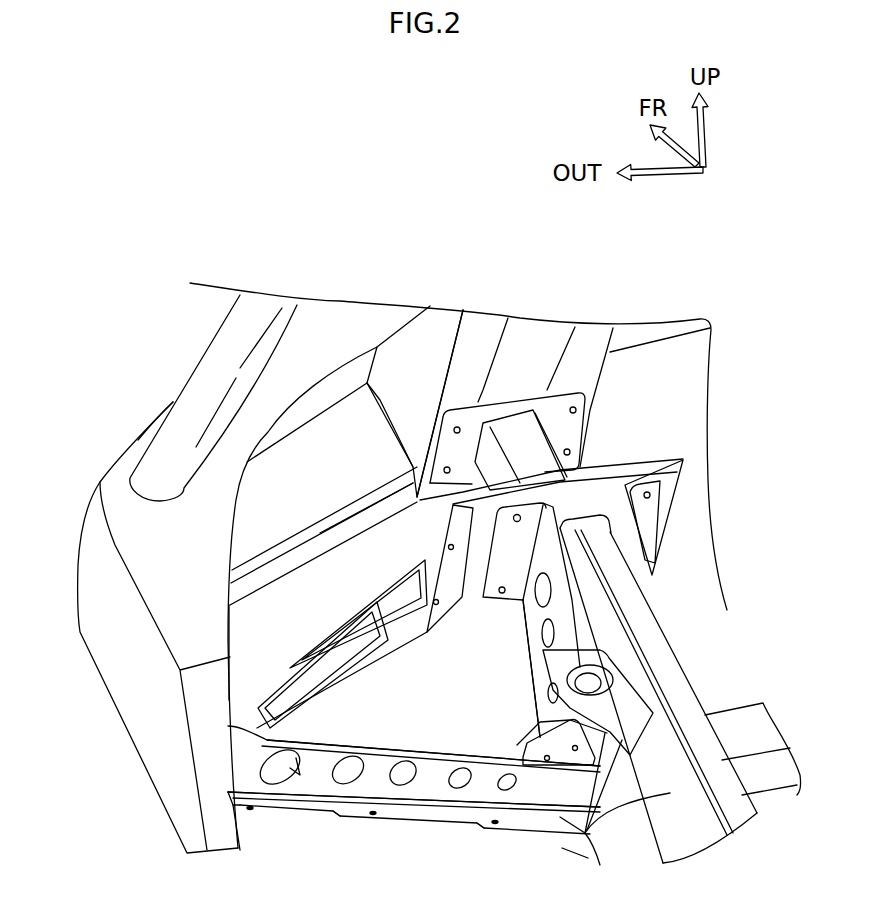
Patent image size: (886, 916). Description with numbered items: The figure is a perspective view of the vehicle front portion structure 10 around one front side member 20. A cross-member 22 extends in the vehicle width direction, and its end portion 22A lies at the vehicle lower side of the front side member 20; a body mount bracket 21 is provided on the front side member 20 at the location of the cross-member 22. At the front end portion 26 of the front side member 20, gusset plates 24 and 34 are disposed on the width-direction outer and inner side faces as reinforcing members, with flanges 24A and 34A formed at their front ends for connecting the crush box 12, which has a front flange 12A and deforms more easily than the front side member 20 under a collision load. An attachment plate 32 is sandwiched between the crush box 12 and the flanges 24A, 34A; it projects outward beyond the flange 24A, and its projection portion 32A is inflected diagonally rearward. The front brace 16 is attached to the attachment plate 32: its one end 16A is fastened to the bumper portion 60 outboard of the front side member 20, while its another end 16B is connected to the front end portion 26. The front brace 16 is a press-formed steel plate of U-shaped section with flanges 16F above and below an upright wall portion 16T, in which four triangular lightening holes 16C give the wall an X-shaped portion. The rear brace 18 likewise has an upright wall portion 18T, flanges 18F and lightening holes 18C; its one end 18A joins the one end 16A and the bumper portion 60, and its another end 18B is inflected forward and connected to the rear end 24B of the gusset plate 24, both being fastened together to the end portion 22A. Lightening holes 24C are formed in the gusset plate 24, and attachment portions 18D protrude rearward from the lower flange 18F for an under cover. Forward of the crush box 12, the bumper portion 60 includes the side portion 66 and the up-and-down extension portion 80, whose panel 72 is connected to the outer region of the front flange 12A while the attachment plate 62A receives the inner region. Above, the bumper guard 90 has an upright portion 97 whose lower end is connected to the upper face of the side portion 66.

The vehicle front structure 10 is at (388, 255).
The crush box 12 is at (558, 435).
The front flange 12A is at (577, 393).
The front brace 16 is at (337, 597).
The one end of front brace 16A is at (250, 673).
The another end of front brace 16B is at (410, 500).
The lightening holes 16C is at (290, 703).
The flange 16F is at (375, 565).
The upright wall portion 16T is at (388, 640).
The rear brace 18 is at (430, 812).
The one end of rear brace 18A is at (237, 757).
The another end of rear brace 18B is at (540, 722).
The lightening holes 18C is at (340, 760).
The attachment portions 18D is at (247, 810).
The flange 18F is at (417, 750).
The upright wall portion 18T is at (433, 787).
The front side member 20 is at (677, 667).
The body mount bracket 21 is at (617, 653).
The cross-member 22 is at (740, 709).
The vehicle width direction end portion 22A is at (592, 836).
The gusset plate 24 is at (525, 644).
The flange 24A is at (500, 605).
The rear end 24B is at (513, 753).
The lightening holes 24C is at (547, 648).
The front end portion 26 is at (568, 524).
The attachment plate 32 is at (644, 455).
The projection portion 32A is at (440, 620).
The gusset plate 34 is at (658, 573).
The flange 34A is at (665, 510).
The bumper portion 60 is at (82, 520).
The attachment plate 62A is at (600, 338).
The side portion 66 is at (83, 630).
The panel 72 is at (483, 388).
The up-and-down extension portion 80 is at (512, 347).
The bumper guard 90 is at (193, 370).
The upright portion 97 is at (147, 448).